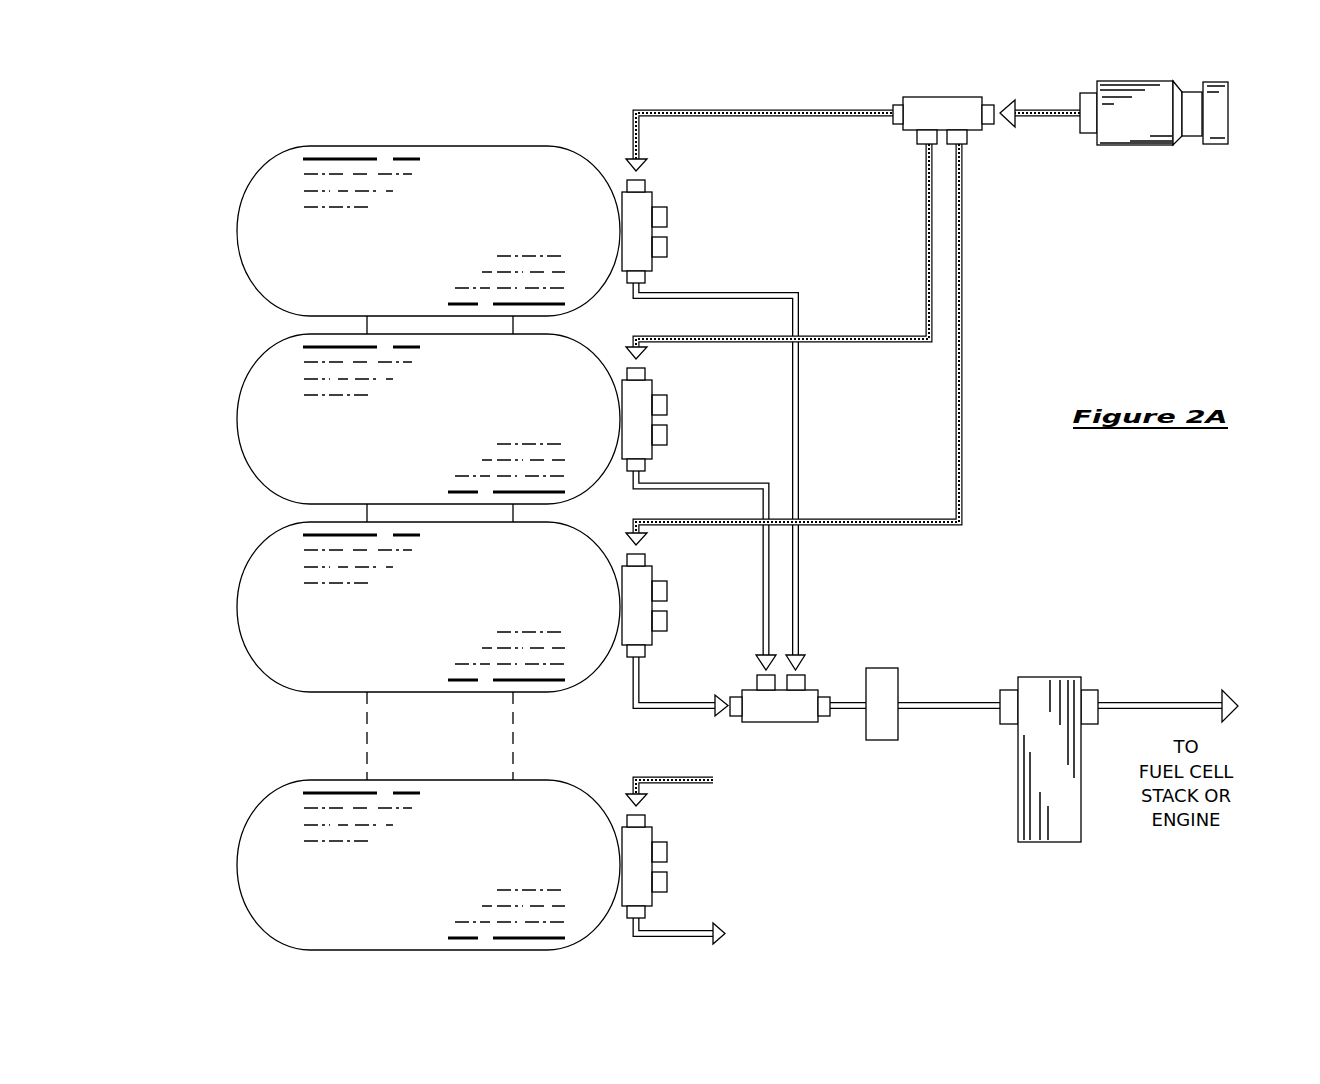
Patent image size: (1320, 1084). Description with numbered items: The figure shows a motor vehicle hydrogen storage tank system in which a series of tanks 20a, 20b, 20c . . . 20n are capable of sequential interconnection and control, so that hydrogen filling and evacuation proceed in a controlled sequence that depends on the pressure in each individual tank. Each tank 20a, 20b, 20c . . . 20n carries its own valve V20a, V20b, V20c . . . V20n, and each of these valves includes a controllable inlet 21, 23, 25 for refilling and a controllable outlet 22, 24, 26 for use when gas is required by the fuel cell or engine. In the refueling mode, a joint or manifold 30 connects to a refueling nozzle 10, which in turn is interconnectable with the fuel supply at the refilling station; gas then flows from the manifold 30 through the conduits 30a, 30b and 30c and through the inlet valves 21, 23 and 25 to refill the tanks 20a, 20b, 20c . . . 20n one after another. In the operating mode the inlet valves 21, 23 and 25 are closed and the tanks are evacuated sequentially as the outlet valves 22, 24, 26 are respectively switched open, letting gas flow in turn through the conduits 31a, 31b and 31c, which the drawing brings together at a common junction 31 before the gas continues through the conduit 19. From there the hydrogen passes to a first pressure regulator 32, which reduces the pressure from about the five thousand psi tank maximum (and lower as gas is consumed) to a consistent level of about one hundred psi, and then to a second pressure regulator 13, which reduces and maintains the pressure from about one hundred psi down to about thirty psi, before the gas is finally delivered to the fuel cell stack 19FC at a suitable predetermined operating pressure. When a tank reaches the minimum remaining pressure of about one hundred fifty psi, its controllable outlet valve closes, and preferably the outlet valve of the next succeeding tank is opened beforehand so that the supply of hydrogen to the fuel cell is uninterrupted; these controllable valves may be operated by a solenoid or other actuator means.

The tank 20a is at (237, 232).
The tank 20b is at (237, 420).
The tank 20c is at (237, 607).
The tank 20n is at (237, 865).
The valve V20a is at (667, 232).
The valve V20b is at (667, 422).
The valve V20c is at (667, 607).
The valve V20n is at (667, 865).
The controllable inlet 21 is at (645, 186).
The controllable outlet 22 is at (645, 276).
The controllable inlet 23 is at (645, 375).
The controllable outlet 24 is at (645, 465).
The controllable inlet 25 is at (645, 560).
The controllable outlet 26 is at (645, 651).
The joint or manifold 30 is at (973, 130).
The conduit 30a is at (812, 120).
The conduit 30b is at (926, 265).
The conduit 30c is at (966, 265).
The refueling nozzle 10 is at (1135, 145).
The manifold 31 is at (782, 722).
The conduit 31a is at (799, 433).
The conduit 31b is at (770, 575).
The conduit 31c is at (665, 712).
The first pressure regulator 32 is at (882, 740).
The second pressure regulator 13 is at (1018, 790).
The conduit 19 is at (942, 702).
The fuel cell stack 19FC is at (1141, 702).